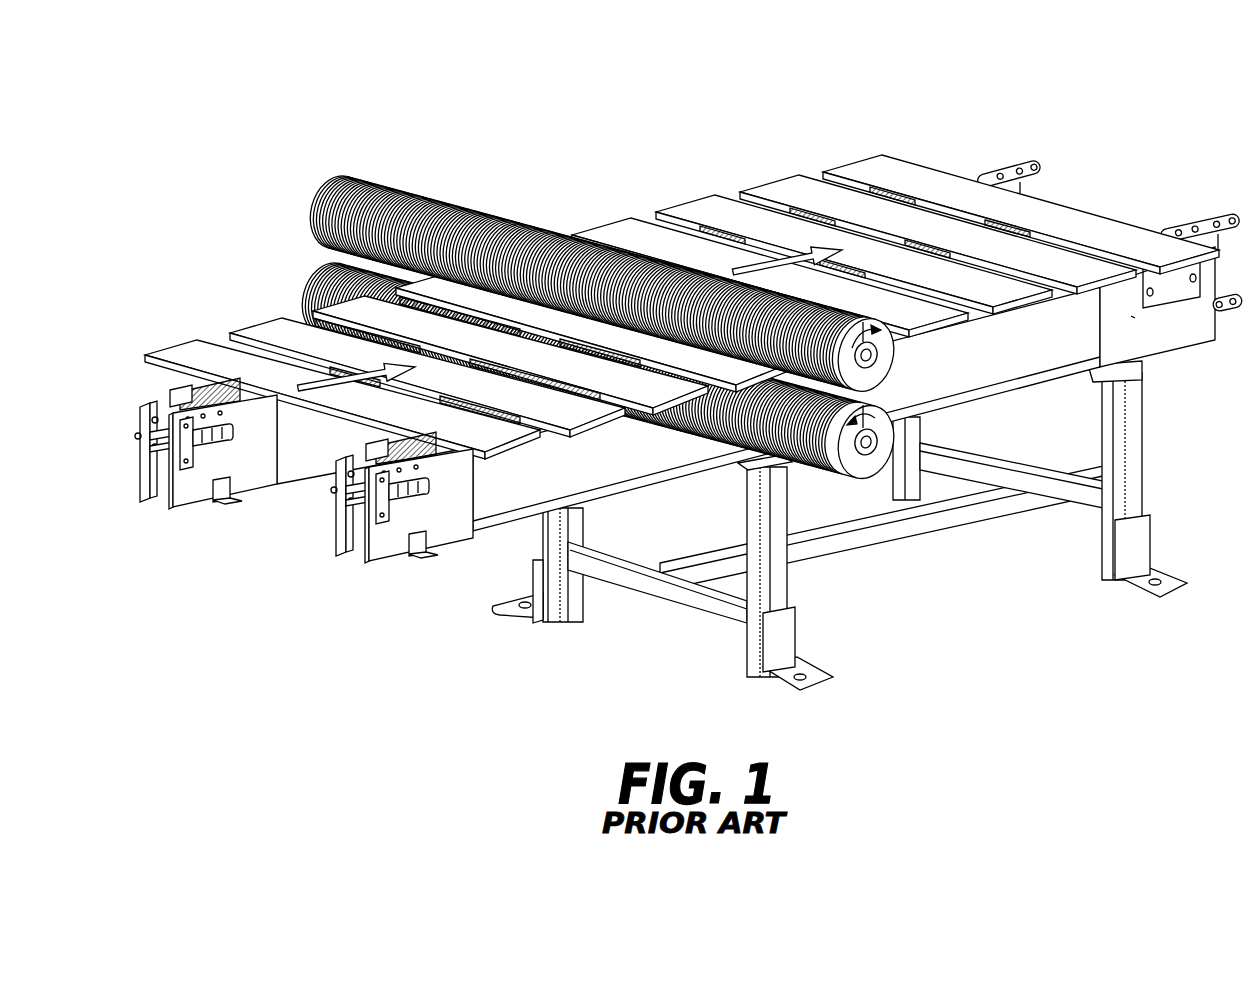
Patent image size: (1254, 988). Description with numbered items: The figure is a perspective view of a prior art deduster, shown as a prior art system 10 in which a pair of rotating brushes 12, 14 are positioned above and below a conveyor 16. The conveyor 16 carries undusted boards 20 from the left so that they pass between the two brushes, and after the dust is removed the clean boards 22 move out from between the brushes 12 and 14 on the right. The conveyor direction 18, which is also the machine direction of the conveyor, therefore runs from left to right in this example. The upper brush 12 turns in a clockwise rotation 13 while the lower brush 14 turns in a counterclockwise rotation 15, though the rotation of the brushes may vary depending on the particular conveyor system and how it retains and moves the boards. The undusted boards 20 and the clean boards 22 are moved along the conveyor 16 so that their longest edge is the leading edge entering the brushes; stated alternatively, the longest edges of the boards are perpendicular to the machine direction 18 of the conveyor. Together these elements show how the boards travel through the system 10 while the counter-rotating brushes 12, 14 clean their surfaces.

The prior art system 10 is at (630, 96).
The rotating brush 12 is at (328, 183).
The clockwise rotation 13 is at (878, 382).
The rotating brush 14 is at (323, 273).
The counterclockwise rotation 15 is at (850, 467).
The conveyor 16 is at (513, 492).
The conveyor direction 18 is at (323, 388).
The undusted boards 20 is at (195, 357).
The clean boards 22 is at (930, 180).